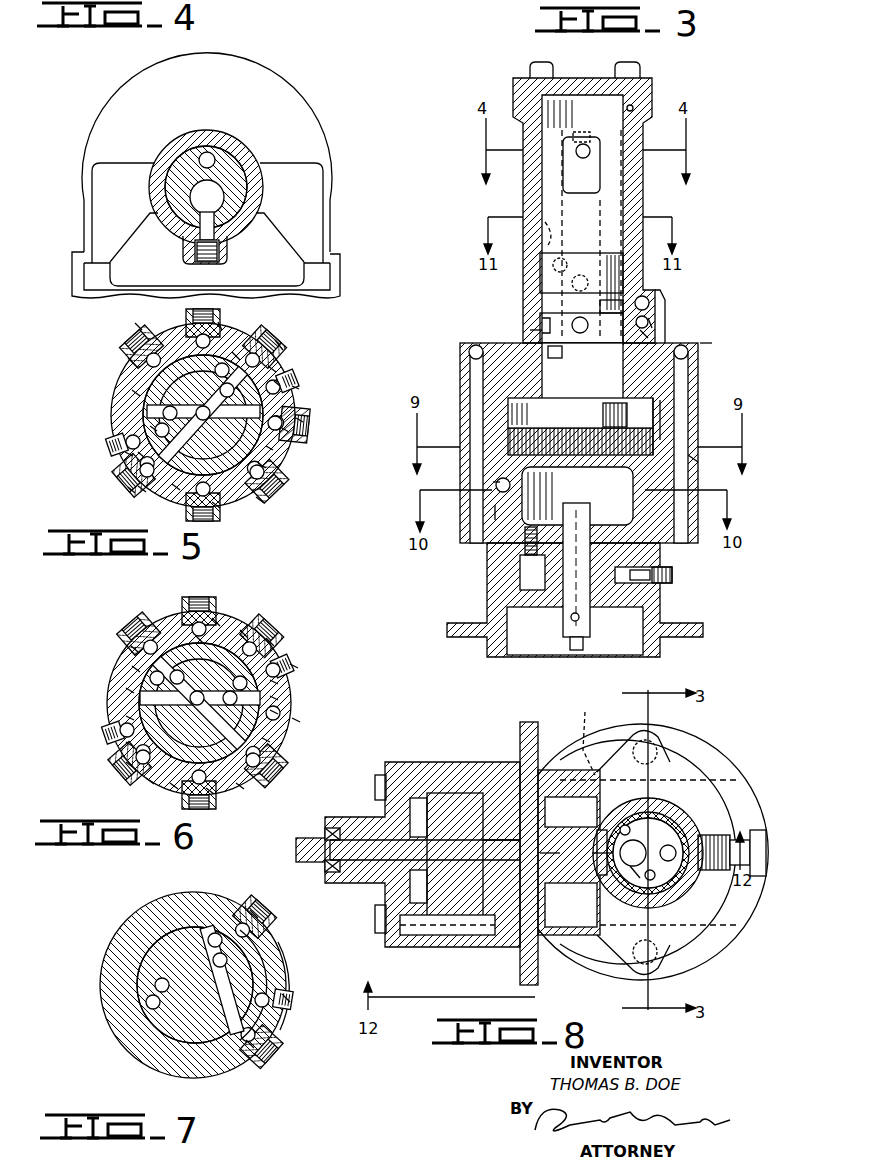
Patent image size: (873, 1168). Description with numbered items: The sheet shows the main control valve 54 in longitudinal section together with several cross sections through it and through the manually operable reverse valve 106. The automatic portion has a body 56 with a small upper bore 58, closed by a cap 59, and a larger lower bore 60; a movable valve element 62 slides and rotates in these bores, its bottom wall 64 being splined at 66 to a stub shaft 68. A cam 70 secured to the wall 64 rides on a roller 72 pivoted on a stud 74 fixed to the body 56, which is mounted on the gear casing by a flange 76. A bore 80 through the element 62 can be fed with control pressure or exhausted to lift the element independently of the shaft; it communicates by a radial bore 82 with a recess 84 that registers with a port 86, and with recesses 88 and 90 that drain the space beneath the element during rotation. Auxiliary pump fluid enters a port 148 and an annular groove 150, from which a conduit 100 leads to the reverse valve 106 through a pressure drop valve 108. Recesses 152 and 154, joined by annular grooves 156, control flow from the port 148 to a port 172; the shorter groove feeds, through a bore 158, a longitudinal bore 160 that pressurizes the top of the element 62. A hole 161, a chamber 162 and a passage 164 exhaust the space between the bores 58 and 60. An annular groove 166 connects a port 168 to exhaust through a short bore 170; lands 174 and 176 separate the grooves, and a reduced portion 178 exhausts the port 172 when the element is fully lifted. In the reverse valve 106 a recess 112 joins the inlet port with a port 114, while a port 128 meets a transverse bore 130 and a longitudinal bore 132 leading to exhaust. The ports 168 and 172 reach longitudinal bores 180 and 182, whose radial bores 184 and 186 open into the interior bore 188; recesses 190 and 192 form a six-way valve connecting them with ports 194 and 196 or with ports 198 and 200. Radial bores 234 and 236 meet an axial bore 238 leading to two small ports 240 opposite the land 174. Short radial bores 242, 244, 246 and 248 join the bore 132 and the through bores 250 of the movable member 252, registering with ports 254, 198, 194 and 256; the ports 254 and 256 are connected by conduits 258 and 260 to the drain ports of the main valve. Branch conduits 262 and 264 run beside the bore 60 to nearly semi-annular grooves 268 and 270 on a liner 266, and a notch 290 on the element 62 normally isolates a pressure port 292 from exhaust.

In FIG. 3, the control valve 54 is at (458, 372).
In FIG. 4, the body 56 is at (170, 140).
In FIG. 3, the body 56 is at (698, 342).
In FIG. 3, the small bore 58 is at (634, 109).
In FIG. 3, the cap 59 is at (603, 62).
In FIG. 3, the larger bore 60 is at (680, 410).
In FIG. 3, the movable valve element 62 is at (660, 400).
In FIG. 3, the bottom wall 64 is at (545, 525).
In FIG. 3, the spline 66 is at (600, 525).
In FIG. 3, the stub shaft 68 is at (585, 633).
In FIG. 3, the cam 70 is at (532, 558).
In FIG. 3, the roller 72 is at (650, 585).
In FIG. 3, the stud 74 is at (672, 572).
In FIG. 3, the flange 76 is at (695, 625).
In FIG. 4, the bore 80 is at (207, 196).
In FIG. 3, the bore 80 is at (577, 496).
In FIG. 8, the bore 80 is at (633, 853).
In FIG. 4, the radial bore 82 is at (209, 218).
In FIG. 3, the radial bore 82 is at (578, 148).
In FIG. 4, the recess 84 is at (227, 235).
In FIG. 3, the recess 84 is at (565, 163).
In FIG. 4, the port 86 is at (203, 237).
In FIG. 3, the recess 88 is at (620, 236).
In FIG. 3, the recess 90 is at (545, 235).
In FIG. 5, the conduit 100 is at (300, 420).
In FIG. 6, the conduit 100 is at (300, 720).
In FIG. 7, the conduit 100 is at (282, 1000).
In FIG. 3, the conduit 100 is at (648, 322).
In FIG. 8, the conduit 100 is at (612, 945).
In FIG. 8, the reverse valve 106 is at (440, 733).
In FIG. 7, the pressure drop valve 108 is at (252, 990).
In FIG. 8, the pressure drop valve 108 is at (432, 935).
In FIG. 7, the recess 112 is at (300, 950).
In FIG. 7, the port 114 is at (258, 916).
In FIG. 7, the port 128 is at (250, 1045).
In FIG. 7, the transverse bore 130 is at (250, 965).
In FIG. 5, the longitudinal bore 132 is at (272, 395).
In FIG. 6, the longitudinal bore 132 is at (275, 725).
In FIG. 7, the longitudinal bore 132 is at (232, 960).
In FIG. 8, the port 148 is at (693, 905).
In FIG. 3, the annular groove 150 is at (540, 318).
In FIG. 8, the annular groove 150 is at (692, 900).
In FIG. 3, the recess 152 is at (570, 332).
In FIG. 8, the recess 152 is at (670, 837).
In FIG. 3, the recess 154 is at (648, 333).
In FIG. 8, the recess 154 is at (637, 878).
In FIG. 3, the annular grooves 156 is at (545, 325).
In FIG. 8, the annular grooves 156 is at (651, 850).
In FIG. 3, the bore 158 is at (540, 335).
In FIG. 8, the bore 158 is at (700, 832).
In FIG. 4, the longitudinal bore 160 is at (242, 147).
In FIG. 3, the longitudinal bore 160 is at (585, 134).
In FIG. 8, the longitudinal bore 160 is at (682, 815).
In FIG. 8, the hole 161 is at (618, 730).
In FIG. 8, the chamber 162 is at (571, 862).
In FIG. 3, the passage 164 is at (652, 318).
In FIG. 8, the passage 164 is at (598, 895).
In FIG. 3, the annular groove 166 is at (610, 280).
In FIG. 3, the port 168 is at (545, 285).
In FIG. 3, the short bore 170 is at (540, 260).
In FIG. 3, the port 172 is at (555, 362).
In FIG. 3, the land 174 is at (649, 303).
In FIG. 3, the land 176 is at (712, 345).
In FIG. 6, the reduced portion 178 is at (270, 640).
In FIG. 3, the reduced portion 178 is at (614, 413).
In FIG. 5, the longitudinal bore 180 is at (188, 326).
In FIG. 6, the longitudinal bore 180 is at (182, 622).
In FIG. 5, the longitudinal bore 182 is at (216, 505).
In FIG. 6, the longitudinal bore 182 is at (210, 790).
In FIG. 5, the radial bore 184 is at (221, 325).
In FIG. 6, the radial bore 184 is at (216, 620).
In FIG. 5, the radial bore 186 is at (175, 488).
In FIG. 6, the radial bore 186 is at (175, 785).
In FIG. 5, the interior bore 188 is at (286, 430).
In FIG. 5, the recess 190 is at (145, 325).
In FIG. 6, the recess 190 is at (243, 632).
In FIG. 5, the recess 192 is at (260, 500).
In FIG. 6, the recess 192 is at (150, 780).
In FIG. 5, the port 194 is at (130, 362).
In FIG. 6, the port 194 is at (135, 648).
In FIG. 5, the port 196 is at (270, 448).
In FIG. 6, the port 196 is at (240, 785).
In FIG. 5, the port 198 is at (282, 344).
In FIG. 5, the port 200 is at (130, 490).
In FIG. 6, the port 200 is at (130, 765).
In FIG. 5, the radial bore 234 is at (140, 490).
In FIG. 6, the radial bore 234 is at (140, 700).
In FIG. 5, the radial bore 236 is at (262, 410).
In FIG. 6, the radial bore 236 is at (270, 740).
In FIG. 8, the radial bore 236 is at (485, 935).
In FIG. 5, the axial bore 238 is at (203, 415).
In FIG. 6, the axial bore 238 is at (199, 703).
In FIG. 8, the axial bore 238 is at (535, 853).
In FIG. 3, the small ports 240 is at (540, 300).
In FIG. 8, the small ports 240 is at (585, 853).
In FIG. 5, the radial bore 242 is at (155, 428).
In FIG. 6, the radial bore 242 is at (130, 690).
In FIG. 5, the radial bore 244 is at (135, 393).
In FIG. 6, the radial bore 244 is at (135, 668).
In FIG. 5, the radial bore 246 is at (238, 356).
In FIG. 6, the radial bore 246 is at (275, 698).
In FIG. 5, the radial bore 248 is at (270, 368).
In FIG. 6, the radial bore 248 is at (275, 712).
In FIG. 5, the bores 250 is at (265, 332).
In FIG. 6, the bores 250 is at (180, 680).
In FIG. 7, the bores 250 is at (148, 1002).
In FIG. 5, the reverse valve movable member 252 is at (262, 466).
In FIG. 6, the reverse valve movable member 252 is at (200, 640).
In FIG. 8, the reverse valve movable member 252 is at (472, 795).
In FIG. 5, the port 254 is at (140, 455).
In FIG. 6, the port 254 is at (130, 718).
In FIG. 5, the port 256 is at (276, 383).
In FIG. 6, the port 256 is at (275, 682).
In FIG. 5, the conduit 258 is at (130, 455).
In FIG. 6, the conduit 258 is at (130, 745).
In FIG. 5, the conduit 260 is at (296, 388).
In FIG. 6, the conduit 260 is at (318, 664).
In FIG. 3, the branch conduit 262 is at (689, 350).
In FIG. 8, the branch conduit 262 is at (607, 735).
In FIG. 3, the branch conduit 264 is at (470, 352).
In FIG. 8, the branch conduit 264 is at (617, 972).
In FIG. 3, the liner 266 is at (675, 430).
In FIG. 3, the groove 268 is at (690, 465).
In FIG. 3, the groove 270 is at (497, 462).
In FIG. 3, the notch 290 is at (505, 510).
In FIG. 3, the pressure port 292 is at (500, 482).